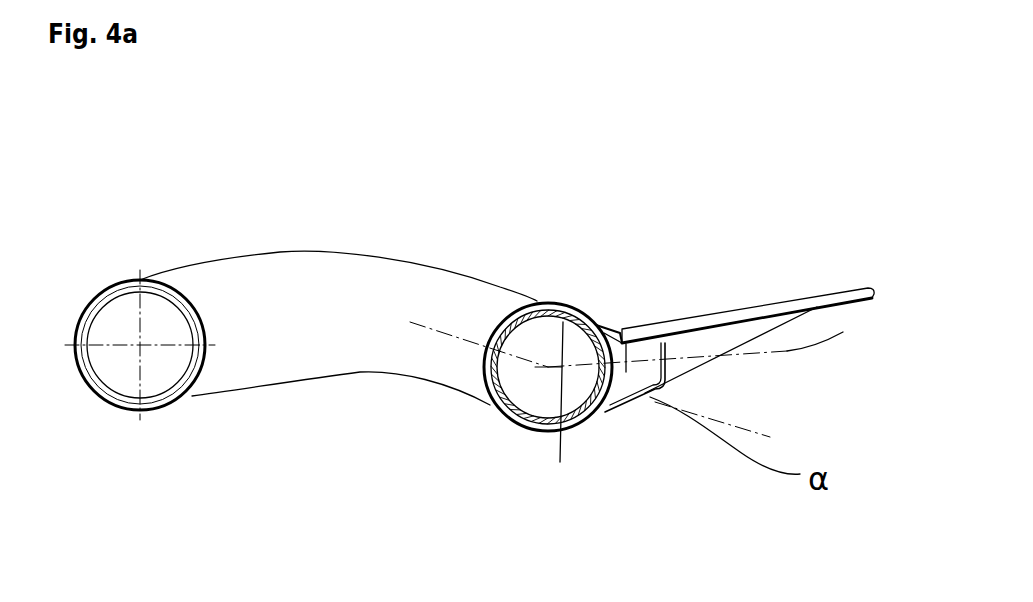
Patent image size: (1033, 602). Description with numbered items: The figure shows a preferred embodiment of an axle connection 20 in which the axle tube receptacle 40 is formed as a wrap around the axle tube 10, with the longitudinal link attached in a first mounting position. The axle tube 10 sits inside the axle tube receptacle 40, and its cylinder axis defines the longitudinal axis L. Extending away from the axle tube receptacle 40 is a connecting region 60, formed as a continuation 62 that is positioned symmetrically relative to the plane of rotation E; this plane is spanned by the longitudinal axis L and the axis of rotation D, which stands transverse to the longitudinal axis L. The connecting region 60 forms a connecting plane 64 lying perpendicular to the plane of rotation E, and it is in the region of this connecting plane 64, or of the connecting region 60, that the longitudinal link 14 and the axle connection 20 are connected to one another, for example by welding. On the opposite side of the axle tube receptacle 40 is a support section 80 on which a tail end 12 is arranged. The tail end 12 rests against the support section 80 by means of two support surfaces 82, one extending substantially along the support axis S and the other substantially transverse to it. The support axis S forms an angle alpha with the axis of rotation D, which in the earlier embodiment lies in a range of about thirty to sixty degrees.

The axle tube 10 is at (595, 318).
The tail end 12 is at (743, 308).
The longitudinal link 14 is at (240, 282).
The axle connection 20 is at (599, 228).
The axle tube receptacle 40 is at (623, 328).
The connecting region 60 is at (555, 298).
The continuation 62 is at (463, 380).
The connecting plane 64 is at (573, 302).
The support section 80 is at (633, 408).
The support surface 82 is at (620, 332).